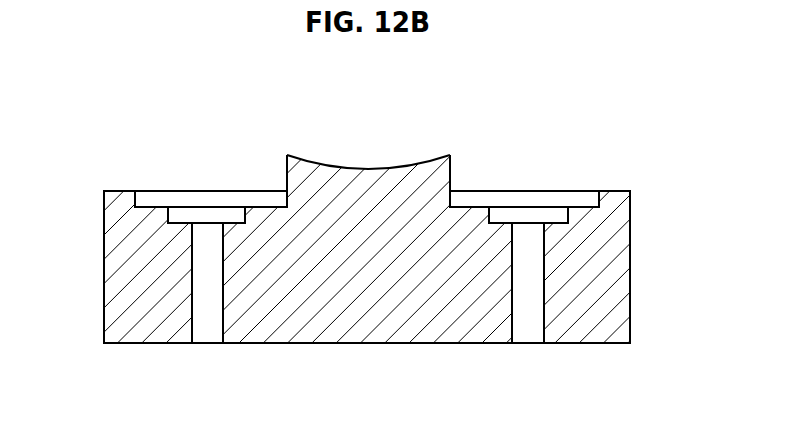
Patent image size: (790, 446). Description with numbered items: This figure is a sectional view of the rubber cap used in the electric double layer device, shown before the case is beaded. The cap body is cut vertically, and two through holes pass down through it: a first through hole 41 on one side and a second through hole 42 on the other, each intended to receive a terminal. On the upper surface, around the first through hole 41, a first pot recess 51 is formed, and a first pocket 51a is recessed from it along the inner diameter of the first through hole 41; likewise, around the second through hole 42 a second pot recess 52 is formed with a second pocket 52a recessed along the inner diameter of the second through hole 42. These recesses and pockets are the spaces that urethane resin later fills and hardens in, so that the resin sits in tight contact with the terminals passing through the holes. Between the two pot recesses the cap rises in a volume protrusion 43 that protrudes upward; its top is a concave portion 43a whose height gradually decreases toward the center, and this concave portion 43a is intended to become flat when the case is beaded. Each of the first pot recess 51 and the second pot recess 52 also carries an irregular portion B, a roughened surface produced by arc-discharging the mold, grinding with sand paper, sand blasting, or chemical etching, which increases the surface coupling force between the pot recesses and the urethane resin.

The first through hole 41 is at (532, 305).
The second through hole 42 is at (211, 305).
The volume protrusion 43 is at (449, 157).
The concave portion 43a is at (365, 168).
The first pot recess 51 is at (568, 194).
The first pocket 51a is at (497, 200).
The second pot recess 52 is at (263, 191).
The second pocket 52a is at (234, 216).
The irregular portion B is at (142, 192).